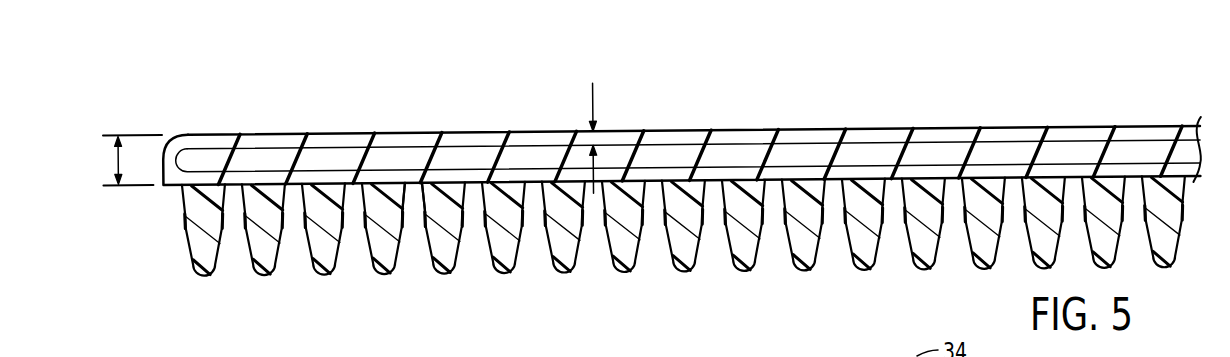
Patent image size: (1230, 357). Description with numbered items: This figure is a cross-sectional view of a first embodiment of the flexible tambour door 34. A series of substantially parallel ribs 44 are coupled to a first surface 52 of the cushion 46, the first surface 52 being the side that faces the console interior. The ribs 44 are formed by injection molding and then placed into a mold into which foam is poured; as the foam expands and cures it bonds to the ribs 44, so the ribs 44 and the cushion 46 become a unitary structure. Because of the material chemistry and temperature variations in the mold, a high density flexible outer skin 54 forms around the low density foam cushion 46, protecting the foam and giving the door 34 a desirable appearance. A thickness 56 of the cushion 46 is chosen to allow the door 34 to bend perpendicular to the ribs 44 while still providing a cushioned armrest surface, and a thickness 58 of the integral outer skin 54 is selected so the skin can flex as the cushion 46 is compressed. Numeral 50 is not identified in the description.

The tambour door 34 is at (788, 110).
The ribs 44 is at (683, 273).
The cushion 46 is at (735, 150).
The outer cover layer 50 is at (340, 134).
The first surface 52 is at (413, 182).
The outer skin 54 is at (263, 134).
The thickness of the cushion 56 is at (116, 162).
The thickness of the integral outer skin 58 is at (597, 132).